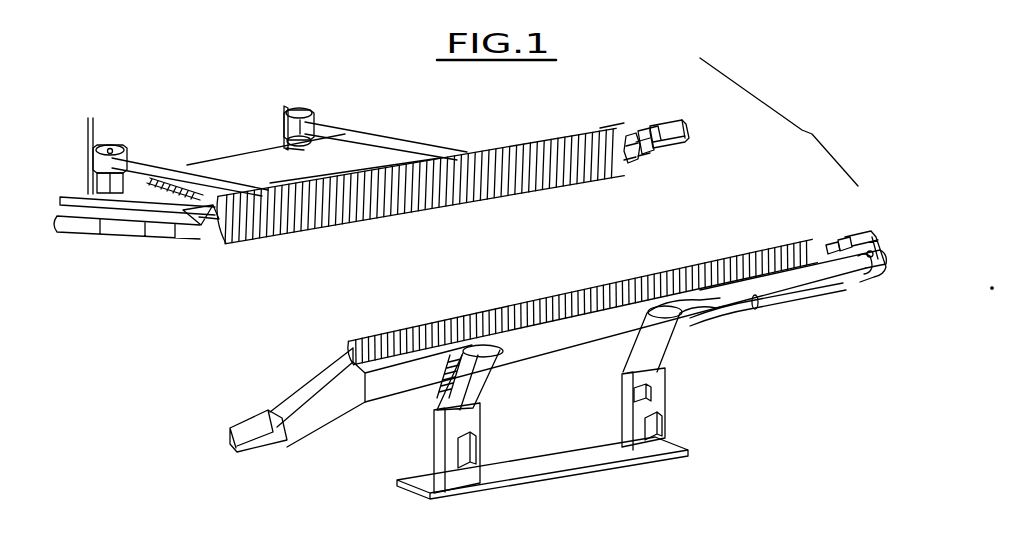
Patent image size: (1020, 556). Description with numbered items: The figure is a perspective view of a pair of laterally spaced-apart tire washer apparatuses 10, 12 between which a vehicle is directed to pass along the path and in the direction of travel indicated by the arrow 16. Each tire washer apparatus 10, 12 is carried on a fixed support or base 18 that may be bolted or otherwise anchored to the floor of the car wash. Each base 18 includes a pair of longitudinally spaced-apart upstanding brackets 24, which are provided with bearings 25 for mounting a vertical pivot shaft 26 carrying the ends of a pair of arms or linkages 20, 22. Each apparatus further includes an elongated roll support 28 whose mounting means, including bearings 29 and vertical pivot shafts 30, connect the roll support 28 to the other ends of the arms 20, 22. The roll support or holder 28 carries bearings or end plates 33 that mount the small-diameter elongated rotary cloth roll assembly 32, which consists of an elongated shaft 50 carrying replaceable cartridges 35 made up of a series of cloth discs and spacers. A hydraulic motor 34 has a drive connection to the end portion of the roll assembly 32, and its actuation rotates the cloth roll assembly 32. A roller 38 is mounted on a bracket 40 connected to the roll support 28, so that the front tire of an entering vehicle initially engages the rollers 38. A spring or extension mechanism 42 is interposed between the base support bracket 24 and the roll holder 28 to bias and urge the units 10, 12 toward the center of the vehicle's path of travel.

The tire washer apparatus 10 is at (648, 84).
The tire washer apparatus 12 is at (868, 290).
The arrow 16 is at (140, 333).
The base 18 is at (580, 466).
The arm 20 is at (404, 140).
The arm 22 is at (155, 164).
The upstanding bracket 24 is at (90, 118).
The bearing 25 is at (286, 152).
The vertical pivot shaft 26 is at (110, 148).
The roll support 28 is at (598, 116).
The bearing 29 is at (672, 280).
The vertical pivot shaft 30 is at (486, 328).
The rotary cloth roll assembly 32 is at (585, 120).
The bearing 33 is at (648, 122).
The hydraulic motor 34 is at (686, 126).
The replaceable cartridge 35 is at (304, 242).
The roller 38 is at (118, 222).
The bracket 40 is at (74, 221).
The spring 42 is at (164, 210).
The shaft 50 is at (639, 156).